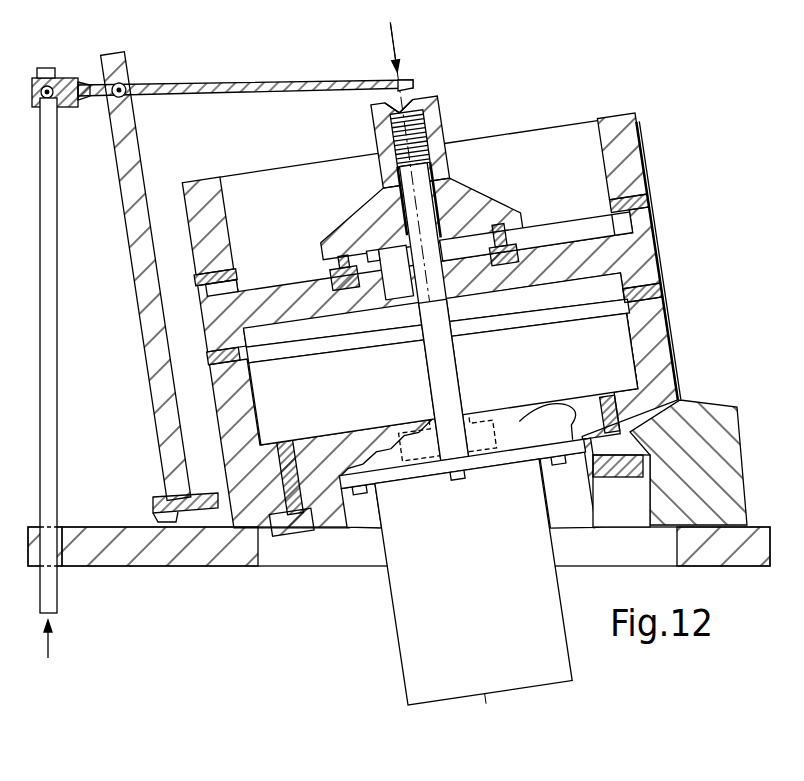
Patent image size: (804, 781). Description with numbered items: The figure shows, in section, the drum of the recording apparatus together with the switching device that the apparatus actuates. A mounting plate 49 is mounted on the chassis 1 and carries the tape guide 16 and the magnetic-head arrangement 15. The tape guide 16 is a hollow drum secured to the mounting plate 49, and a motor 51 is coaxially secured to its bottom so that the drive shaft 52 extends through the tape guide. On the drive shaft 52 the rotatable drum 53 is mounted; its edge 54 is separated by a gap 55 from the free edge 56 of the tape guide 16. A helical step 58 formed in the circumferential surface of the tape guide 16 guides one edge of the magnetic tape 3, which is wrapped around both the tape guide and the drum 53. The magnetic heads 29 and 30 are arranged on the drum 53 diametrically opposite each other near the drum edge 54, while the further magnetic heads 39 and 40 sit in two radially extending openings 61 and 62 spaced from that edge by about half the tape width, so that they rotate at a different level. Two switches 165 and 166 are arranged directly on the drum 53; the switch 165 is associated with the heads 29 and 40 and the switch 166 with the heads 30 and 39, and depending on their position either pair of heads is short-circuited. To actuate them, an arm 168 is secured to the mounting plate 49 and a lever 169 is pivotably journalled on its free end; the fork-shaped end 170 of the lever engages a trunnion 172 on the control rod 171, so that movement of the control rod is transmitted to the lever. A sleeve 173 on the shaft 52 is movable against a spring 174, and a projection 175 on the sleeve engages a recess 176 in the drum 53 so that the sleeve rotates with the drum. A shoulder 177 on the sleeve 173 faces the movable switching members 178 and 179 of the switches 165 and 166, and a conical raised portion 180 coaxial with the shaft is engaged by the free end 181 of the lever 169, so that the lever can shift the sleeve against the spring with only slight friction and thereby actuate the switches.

The chassis 1 is at (117, 560).
The magnetic tape 3 is at (648, 215).
The magnetic-head arrangement 15 is at (647, 142).
The tape guide 16 is at (683, 386).
The magnetic head 29 is at (208, 358).
The magnetic head 30 is at (659, 292).
The magnetic head 39 is at (644, 207).
The magnetic head 40 is at (195, 277).
The mounting plate 49 is at (733, 477).
The motor 51 is at (397, 592).
The drive shaft 52 is at (424, 188).
The drum 53 is at (625, 133).
The drum edge 54 is at (340, 338).
The gap 55 is at (310, 347).
The free edge 56 is at (275, 356).
The helical step 58 is at (668, 338).
The opening 61 is at (612, 222).
The opening 62 is at (235, 272).
The switch 165 is at (332, 277).
The switch 166 is at (505, 245).
The arm 168 is at (160, 404).
The lever 169 is at (182, 82).
The end of lever 170 is at (67, 100).
The control rod 171 is at (57, 330).
The trunnion 172 is at (31, 86).
The sleeve 173 is at (445, 128).
The spring 174 is at (424, 112).
The projection 175 is at (420, 320).
The recess 176 is at (385, 292).
The shoulder 177 is at (352, 222).
The movable switching member 178 is at (338, 262).
The movable switching member 179 is at (514, 232).
The conical raised portion 180 is at (383, 97).
The free end of lever 181 is at (387, 80).